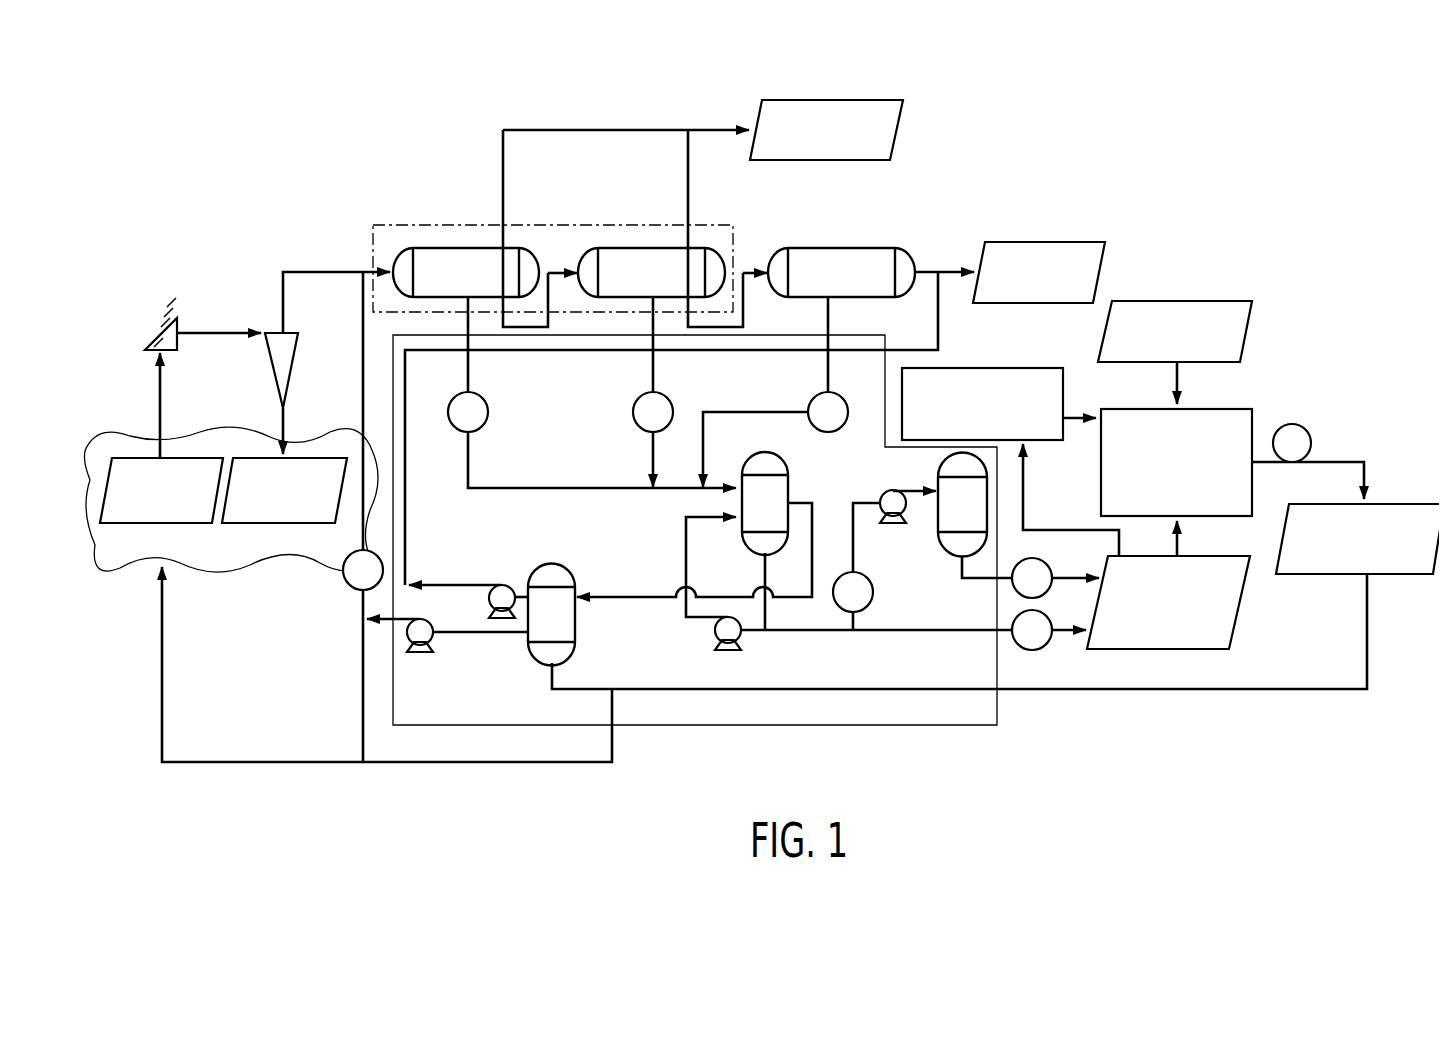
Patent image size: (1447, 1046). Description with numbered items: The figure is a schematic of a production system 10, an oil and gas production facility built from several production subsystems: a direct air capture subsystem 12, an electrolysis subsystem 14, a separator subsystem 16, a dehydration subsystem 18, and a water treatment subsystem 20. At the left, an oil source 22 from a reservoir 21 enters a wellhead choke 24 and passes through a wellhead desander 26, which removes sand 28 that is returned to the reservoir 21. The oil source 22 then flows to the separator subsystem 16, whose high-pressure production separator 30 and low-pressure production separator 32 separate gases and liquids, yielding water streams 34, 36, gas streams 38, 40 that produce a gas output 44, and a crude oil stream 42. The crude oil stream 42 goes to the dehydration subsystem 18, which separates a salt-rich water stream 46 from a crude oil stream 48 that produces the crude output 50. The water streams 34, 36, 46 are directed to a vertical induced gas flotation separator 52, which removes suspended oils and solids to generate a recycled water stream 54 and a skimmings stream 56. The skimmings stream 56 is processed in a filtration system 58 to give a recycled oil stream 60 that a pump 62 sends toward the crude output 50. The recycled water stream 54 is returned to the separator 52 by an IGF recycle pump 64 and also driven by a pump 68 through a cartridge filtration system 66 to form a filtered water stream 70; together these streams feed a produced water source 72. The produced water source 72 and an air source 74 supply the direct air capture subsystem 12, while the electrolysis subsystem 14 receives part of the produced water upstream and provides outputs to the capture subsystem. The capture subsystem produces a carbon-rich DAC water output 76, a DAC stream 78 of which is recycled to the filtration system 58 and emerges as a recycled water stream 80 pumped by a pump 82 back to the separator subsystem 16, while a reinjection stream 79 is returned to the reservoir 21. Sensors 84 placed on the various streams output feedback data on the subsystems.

The production system 10 is at (228, 211).
The direct air capture subsystem 12 is at (1222, 409).
The electrolysis subsystem 14 is at (998, 366).
The separator subsystem 16 is at (407, 224).
The dehydration subsystem 18 is at (840, 248).
The water treatment subsystem 20 is at (570, 476).
The reservoir 21 is at (190, 568).
The oil source 22 is at (143, 523).
The wellhead choke 24 is at (150, 340).
The wellhead desander 26 is at (267, 347).
The sand 28 is at (257, 523).
The high-pressure production separator 30 is at (468, 247).
The low-pressure production separator 32 is at (653, 247).
The water stream 34 is at (468, 372).
The water stream 36 is at (652, 368).
The gas stream 38 is at (597, 128).
The gas stream 40 is at (690, 187).
The crude oil stream 42 is at (552, 270).
The gas output 44 is at (835, 98).
The water stream 46 is at (830, 315).
The crude oil stream 48 is at (947, 270).
The crude output 50 is at (1045, 240).
The vertical induced gas flotation separator 52 is at (790, 492).
The recycled water stream 54 is at (683, 567).
The skimmings stream 56 is at (647, 597).
The filtration system 58 is at (568, 572).
The recycled oil stream 60 is at (938, 310).
The pump 62 is at (500, 580).
The IGF recycle pump 64 is at (713, 628).
The cartridge filtration system 66 is at (937, 478).
The pump 68 is at (885, 493).
The filtered water stream 70 is at (1055, 572).
The produced water source 72 is at (1207, 556).
The air source 74 is at (1205, 300).
The direct air capture water output 76 is at (1336, 577).
The DAC stream 78 is at (1369, 632).
The reinjection stream 79 is at (387, 762).
The recycled water stream 80 is at (360, 410).
The pump 82 is at (427, 640).
The sensors 84 is at (487, 420).